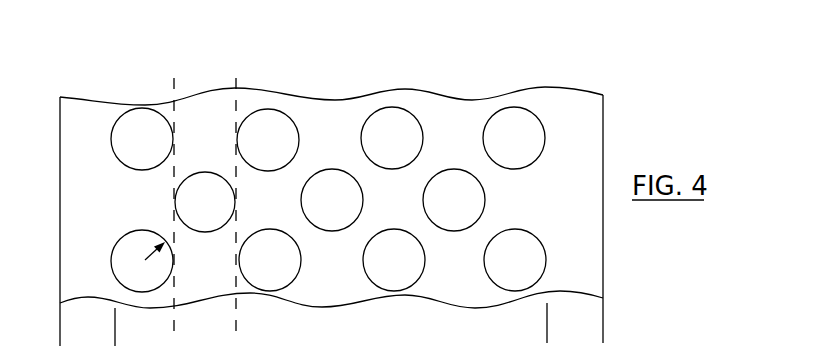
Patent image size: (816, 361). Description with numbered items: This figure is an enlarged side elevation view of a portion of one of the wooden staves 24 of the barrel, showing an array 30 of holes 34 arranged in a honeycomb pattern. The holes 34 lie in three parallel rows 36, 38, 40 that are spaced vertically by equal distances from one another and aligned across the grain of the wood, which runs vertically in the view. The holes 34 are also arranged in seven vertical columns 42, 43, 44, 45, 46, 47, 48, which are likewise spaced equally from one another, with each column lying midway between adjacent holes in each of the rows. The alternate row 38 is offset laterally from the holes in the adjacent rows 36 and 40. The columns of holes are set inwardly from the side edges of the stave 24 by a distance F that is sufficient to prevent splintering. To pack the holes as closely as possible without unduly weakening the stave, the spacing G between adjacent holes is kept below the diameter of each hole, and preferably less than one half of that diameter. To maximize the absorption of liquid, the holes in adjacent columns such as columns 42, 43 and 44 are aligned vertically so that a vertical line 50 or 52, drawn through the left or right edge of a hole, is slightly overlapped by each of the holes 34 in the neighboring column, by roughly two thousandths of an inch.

The stave 24 is at (603, 117).
The array of holes 30 is at (364, 188).
The holes 34 is at (122, 115).
The row of holes 36 is at (95, 263).
The row of holes 38 is at (95, 199).
The row of holes 40 is at (95, 140).
The vertical column of holes 42 is at (142, 80).
The vertical column of holes 43 is at (205, 80).
The vertical column of holes 44 is at (266, 79).
The vertical column of holes 45 is at (326, 80).
The vertical column of holes 46 is at (389, 79).
The vertical column of holes 47 is at (451, 80).
The vertical column of holes 48 is at (514, 79).
The vertical alignment line 50 is at (175, 219).
The vertical alignment line 52 is at (238, 219).
The spacing between adjacent holes G is at (192, 213).
The distance from side edge F is at (148, 323).